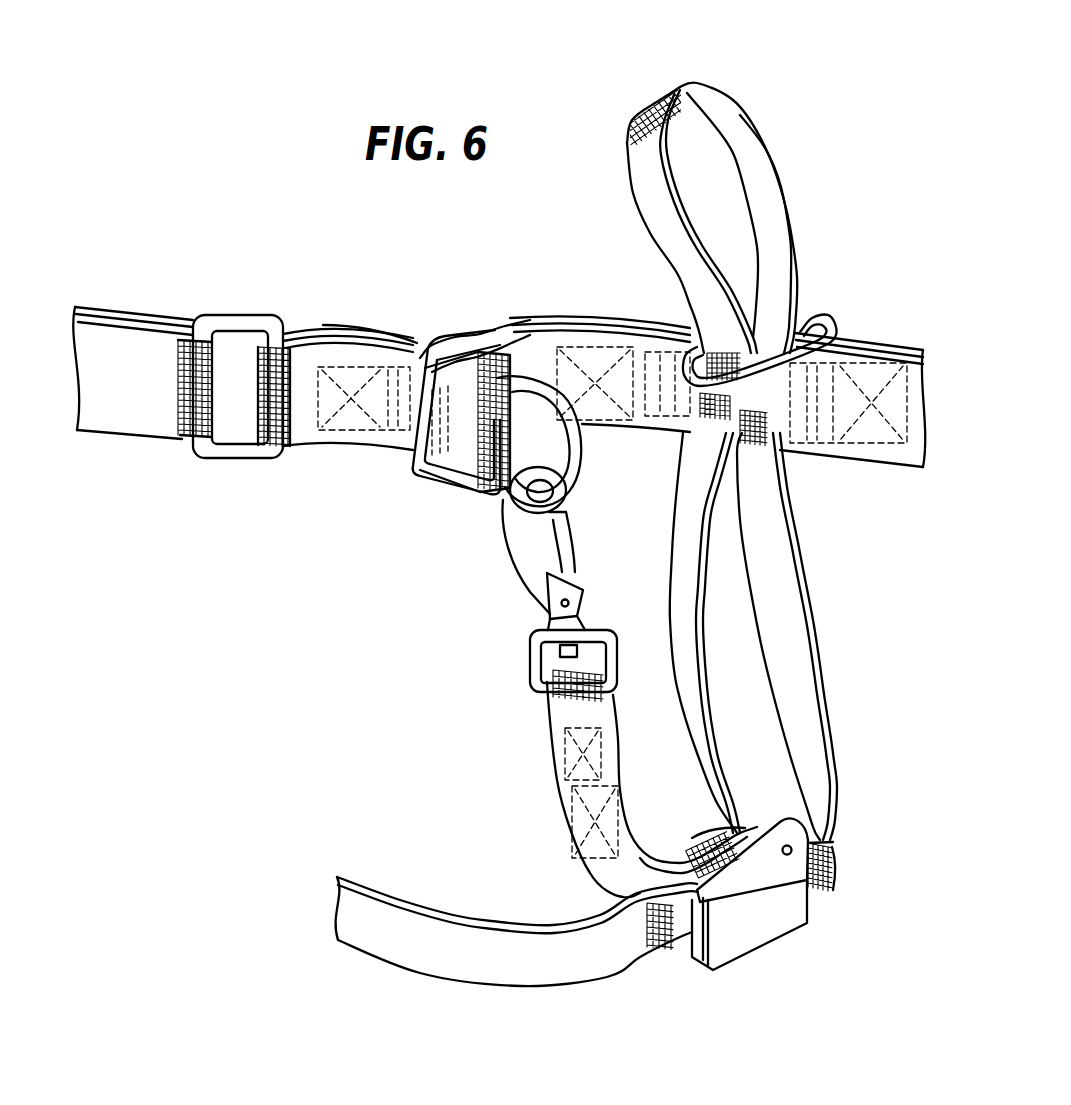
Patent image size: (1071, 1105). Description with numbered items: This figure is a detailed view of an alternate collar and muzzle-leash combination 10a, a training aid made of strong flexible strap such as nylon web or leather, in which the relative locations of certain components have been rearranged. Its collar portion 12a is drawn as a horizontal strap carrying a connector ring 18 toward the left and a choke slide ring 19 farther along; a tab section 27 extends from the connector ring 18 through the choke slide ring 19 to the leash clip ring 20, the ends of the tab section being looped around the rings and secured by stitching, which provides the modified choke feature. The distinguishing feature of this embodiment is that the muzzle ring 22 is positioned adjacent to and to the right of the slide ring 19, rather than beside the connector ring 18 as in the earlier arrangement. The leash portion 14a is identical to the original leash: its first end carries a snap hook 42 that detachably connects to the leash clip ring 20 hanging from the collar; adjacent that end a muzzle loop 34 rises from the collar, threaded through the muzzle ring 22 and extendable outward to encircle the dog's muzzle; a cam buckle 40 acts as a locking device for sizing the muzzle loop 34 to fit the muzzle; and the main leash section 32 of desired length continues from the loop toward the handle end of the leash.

The alternate collar and muzzle-leash combination 10a is at (783, 75).
The collar portion 12a is at (140, 318).
The leash portion 14a is at (636, 970).
The connector ring 18 is at (235, 320).
The choke slide ring 19 is at (448, 343).
The leash clip ring 20 is at (574, 470).
The muzzle ring 22 is at (829, 335).
The tab section 27 is at (363, 360).
The main leash section 32 is at (422, 940).
The muzzle loop 34 is at (803, 668).
The cam buckle 40 is at (763, 917).
The snap hook 42 is at (520, 560).